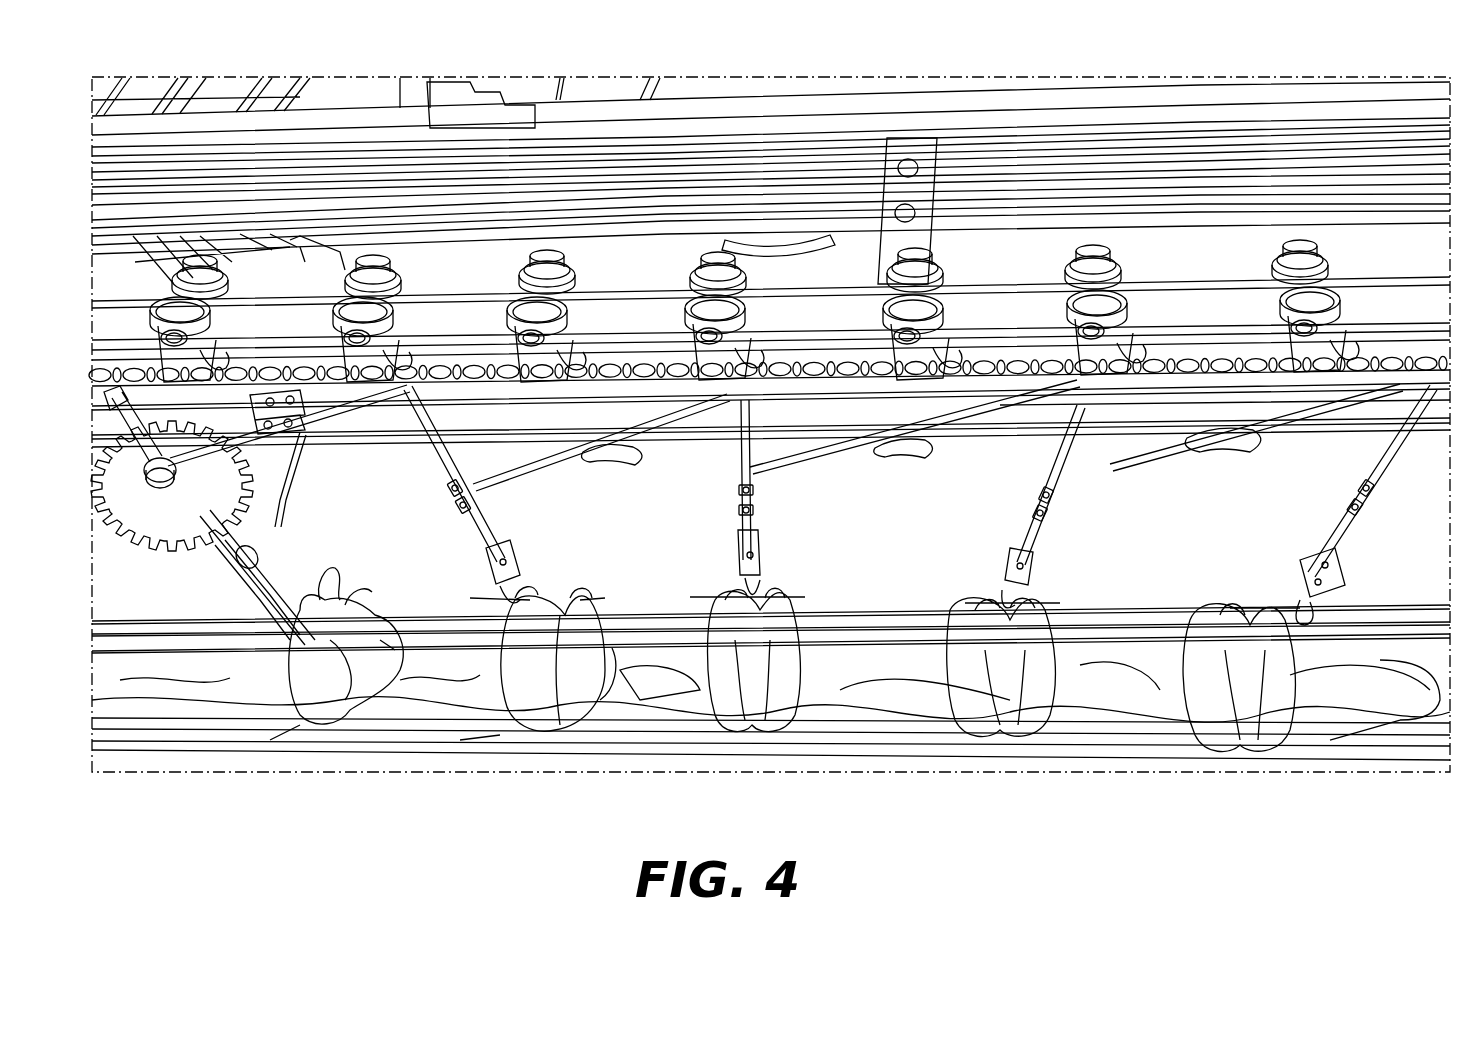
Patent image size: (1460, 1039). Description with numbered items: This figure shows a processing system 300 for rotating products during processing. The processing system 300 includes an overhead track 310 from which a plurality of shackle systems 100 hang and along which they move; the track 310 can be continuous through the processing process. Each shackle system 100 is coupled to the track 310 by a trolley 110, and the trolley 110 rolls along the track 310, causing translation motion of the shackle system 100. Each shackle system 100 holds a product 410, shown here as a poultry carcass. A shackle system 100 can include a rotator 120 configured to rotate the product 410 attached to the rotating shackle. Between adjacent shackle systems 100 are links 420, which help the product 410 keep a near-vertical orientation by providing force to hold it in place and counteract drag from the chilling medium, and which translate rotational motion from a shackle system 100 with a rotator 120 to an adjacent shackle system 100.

The processing system 300 is at (160, 35).
The trolley 110 is at (383, 258).
The links 420 is at (657, 440).
The track 310 is at (860, 288).
The rotator 120 is at (145, 557).
The shackle system 100 is at (203, 587).
The product 410 is at (377, 650).